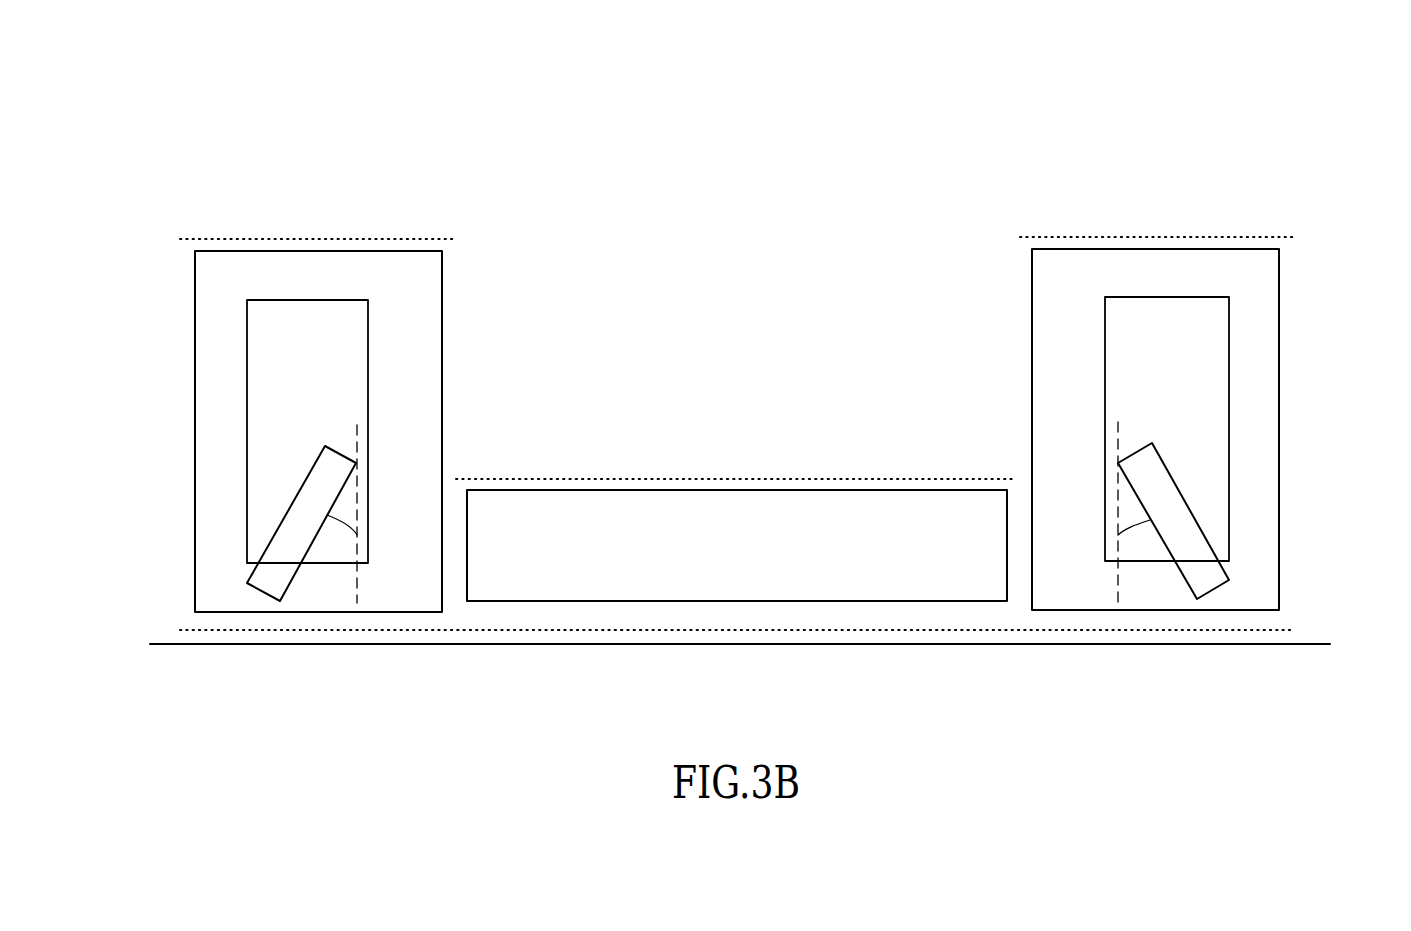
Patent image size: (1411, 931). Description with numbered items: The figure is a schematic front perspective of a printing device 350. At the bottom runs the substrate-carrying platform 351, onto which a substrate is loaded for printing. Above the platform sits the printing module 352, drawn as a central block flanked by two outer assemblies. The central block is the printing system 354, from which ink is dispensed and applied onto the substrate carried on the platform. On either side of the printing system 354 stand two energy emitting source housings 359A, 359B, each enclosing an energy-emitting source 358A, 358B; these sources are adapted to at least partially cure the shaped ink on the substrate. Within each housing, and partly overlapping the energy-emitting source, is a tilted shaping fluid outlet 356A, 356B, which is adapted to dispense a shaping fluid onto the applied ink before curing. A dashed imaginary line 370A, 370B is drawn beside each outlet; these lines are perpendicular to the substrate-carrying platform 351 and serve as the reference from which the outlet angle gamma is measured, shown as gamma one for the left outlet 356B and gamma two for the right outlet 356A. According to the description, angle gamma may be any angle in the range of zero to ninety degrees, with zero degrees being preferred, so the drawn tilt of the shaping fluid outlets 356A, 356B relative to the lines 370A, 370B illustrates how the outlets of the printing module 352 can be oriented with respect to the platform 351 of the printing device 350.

The printing device 350 is at (385, 76).
The substrate-carrying platform 351 is at (1207, 645).
The printing module 352 is at (886, 478).
The printing system 354 is at (593, 490).
The shaping fluid outlet 356A is at (1223, 563).
The shaping fluid outlet 356B is at (285, 517).
The energy-emitting source 358A is at (1229, 365).
The energy-emitting source 358B is at (247, 333).
The energy emitting source housing 359A is at (1173, 249).
The energy emitting source housing 359B is at (275, 251).
The imaginary line 370A is at (1117, 445).
The imaginary line 370B is at (357, 452).